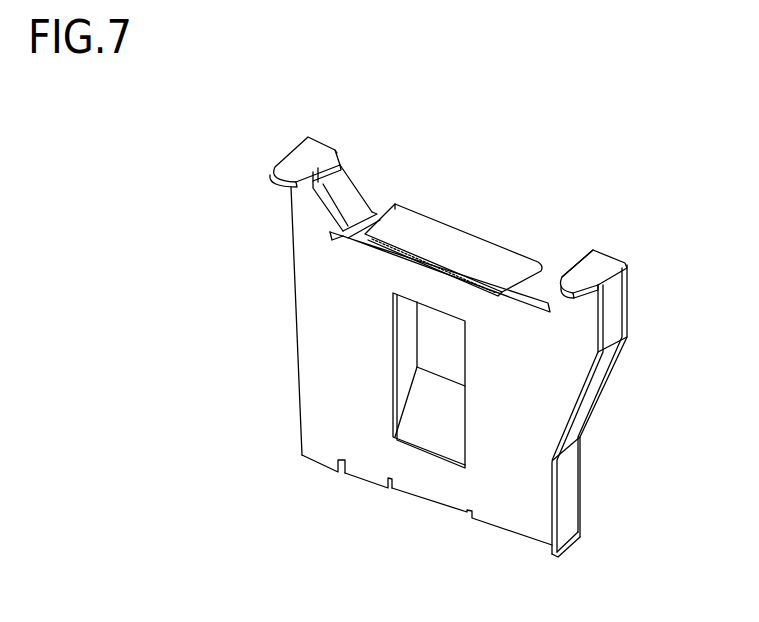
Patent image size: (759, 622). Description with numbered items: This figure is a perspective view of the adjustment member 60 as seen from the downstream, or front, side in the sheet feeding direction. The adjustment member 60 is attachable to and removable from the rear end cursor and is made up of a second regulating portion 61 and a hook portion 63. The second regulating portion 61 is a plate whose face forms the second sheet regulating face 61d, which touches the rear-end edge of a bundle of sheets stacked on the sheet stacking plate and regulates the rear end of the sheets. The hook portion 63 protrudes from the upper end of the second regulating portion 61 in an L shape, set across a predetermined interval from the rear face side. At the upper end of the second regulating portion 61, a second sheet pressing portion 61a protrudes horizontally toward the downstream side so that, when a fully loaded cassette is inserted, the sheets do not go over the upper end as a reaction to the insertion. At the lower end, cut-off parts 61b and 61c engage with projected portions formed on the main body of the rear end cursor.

The adjustment member 60 is at (571, 199).
The second regulating portion 61 is at (608, 371).
The second sheet pressing portion 61a is at (289, 170).
The cut-off part 61b is at (361, 472).
The cut-off part 61c is at (501, 530).
The second sheet regulating face 61d is at (313, 341).
The hook portion 63 is at (455, 216).